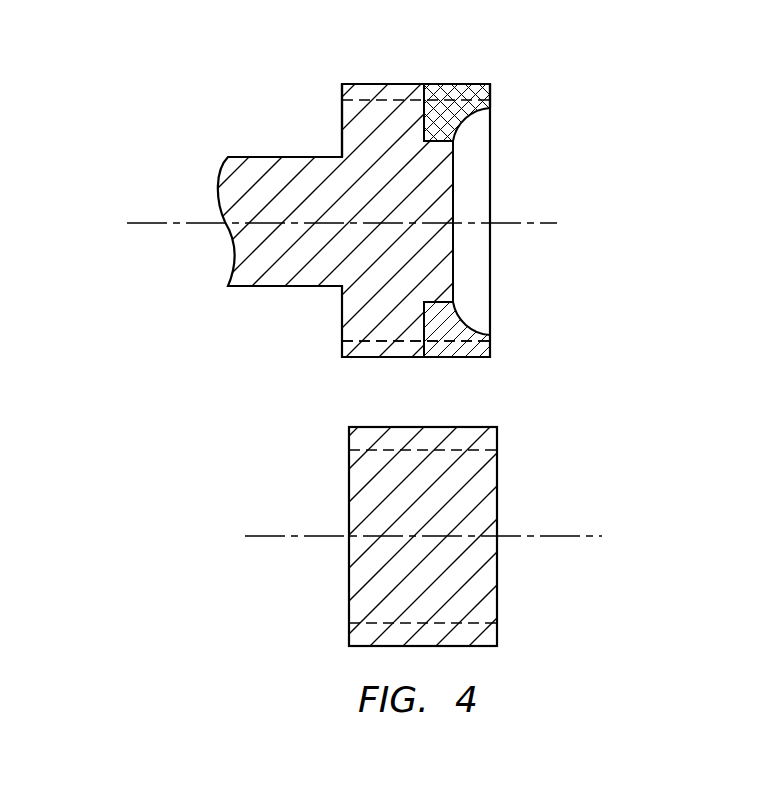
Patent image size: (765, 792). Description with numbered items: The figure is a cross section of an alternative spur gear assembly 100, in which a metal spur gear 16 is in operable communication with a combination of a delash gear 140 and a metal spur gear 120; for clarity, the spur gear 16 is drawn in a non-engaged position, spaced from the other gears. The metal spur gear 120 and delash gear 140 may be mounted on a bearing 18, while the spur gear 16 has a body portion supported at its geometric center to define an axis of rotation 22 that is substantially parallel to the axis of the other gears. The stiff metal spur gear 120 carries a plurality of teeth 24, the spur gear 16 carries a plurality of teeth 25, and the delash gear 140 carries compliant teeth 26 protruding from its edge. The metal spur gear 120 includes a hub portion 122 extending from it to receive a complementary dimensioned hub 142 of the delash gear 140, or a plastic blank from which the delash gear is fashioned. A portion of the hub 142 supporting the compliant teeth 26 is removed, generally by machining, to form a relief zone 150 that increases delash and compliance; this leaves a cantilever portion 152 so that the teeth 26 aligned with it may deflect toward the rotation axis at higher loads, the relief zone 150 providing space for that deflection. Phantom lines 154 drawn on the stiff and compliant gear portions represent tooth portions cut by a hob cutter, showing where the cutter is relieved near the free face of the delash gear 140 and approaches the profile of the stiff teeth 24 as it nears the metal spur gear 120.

The gear assembly 100 is at (382, 355).
The metal spur gear 120 is at (382, 210).
The second spur gear 16 is at (396, 538).
The bearing 18 is at (143, 224).
The axis of rotation 22 is at (262, 537).
The teeth 24 is at (342, 83).
The teeth 25 is at (498, 433).
The teeth 26 is at (462, 83).
The hub portion 122 is at (443, 143).
The delash gear 140 is at (491, 97).
The hub 142 is at (450, 280).
The relief zone 150 is at (470, 290).
The cantilever portion 152 is at (392, 97).
The phantom lines 154 is at (368, 343).